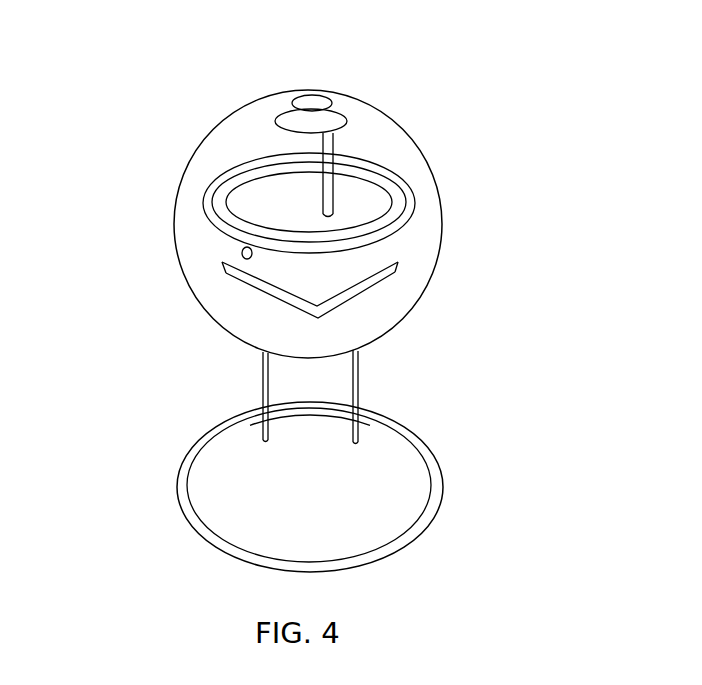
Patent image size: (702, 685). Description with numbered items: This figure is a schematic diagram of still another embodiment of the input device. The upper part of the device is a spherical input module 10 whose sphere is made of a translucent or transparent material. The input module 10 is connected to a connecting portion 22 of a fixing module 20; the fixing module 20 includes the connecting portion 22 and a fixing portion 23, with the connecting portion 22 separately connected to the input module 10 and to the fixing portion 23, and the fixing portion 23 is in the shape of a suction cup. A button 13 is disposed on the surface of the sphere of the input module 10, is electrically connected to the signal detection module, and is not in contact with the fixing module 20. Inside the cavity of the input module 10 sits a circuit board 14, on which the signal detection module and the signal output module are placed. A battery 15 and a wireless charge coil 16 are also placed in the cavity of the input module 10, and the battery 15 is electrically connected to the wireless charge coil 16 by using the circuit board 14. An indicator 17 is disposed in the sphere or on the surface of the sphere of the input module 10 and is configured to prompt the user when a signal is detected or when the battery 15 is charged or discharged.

The input module 10 is at (105, 22).
The button 13 is at (303, 92).
The circuit board 14 is at (210, 242).
The battery 15 is at (255, 292).
The wireless charge coil 16 is at (215, 181).
The indicator 17 is at (247, 257).
The fixing module 20 is at (352, 446).
The connecting portion 22 is at (355, 382).
The fixing portion 23 is at (350, 484).